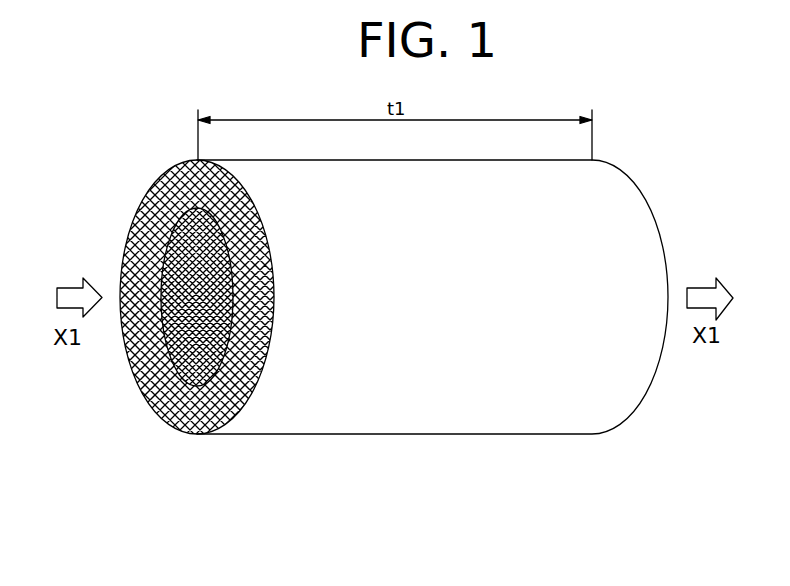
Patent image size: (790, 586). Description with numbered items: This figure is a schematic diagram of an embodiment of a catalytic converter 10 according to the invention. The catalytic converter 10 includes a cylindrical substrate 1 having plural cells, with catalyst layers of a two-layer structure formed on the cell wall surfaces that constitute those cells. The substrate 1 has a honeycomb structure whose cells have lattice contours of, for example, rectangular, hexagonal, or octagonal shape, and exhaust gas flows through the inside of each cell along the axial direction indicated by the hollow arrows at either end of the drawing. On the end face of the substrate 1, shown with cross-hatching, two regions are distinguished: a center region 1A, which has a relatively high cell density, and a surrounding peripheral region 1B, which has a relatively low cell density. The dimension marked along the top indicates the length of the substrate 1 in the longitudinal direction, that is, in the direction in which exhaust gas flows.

The catalytic converter 10 is at (478, 456).
The substrate 1 is at (198, 349).
The center region 1A is at (183, 384).
The peripheral region 1B is at (202, 413).